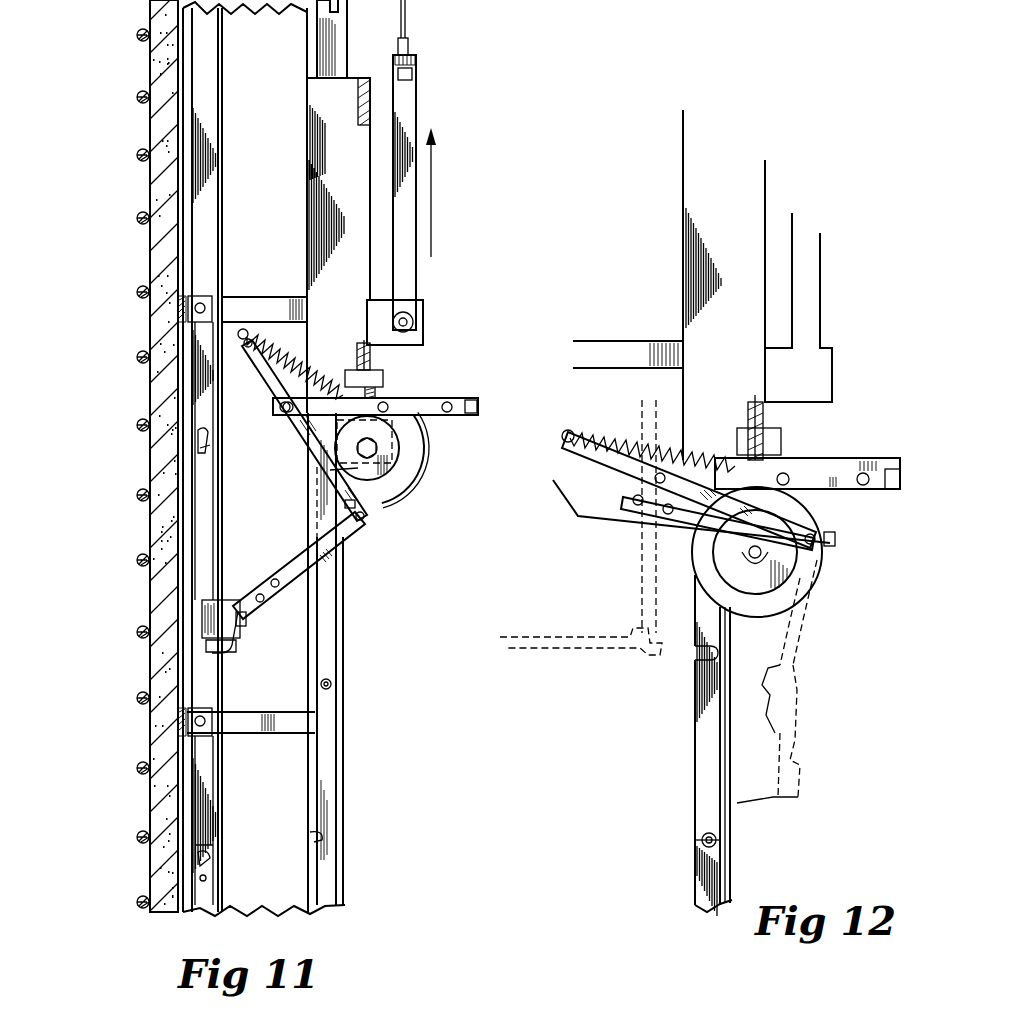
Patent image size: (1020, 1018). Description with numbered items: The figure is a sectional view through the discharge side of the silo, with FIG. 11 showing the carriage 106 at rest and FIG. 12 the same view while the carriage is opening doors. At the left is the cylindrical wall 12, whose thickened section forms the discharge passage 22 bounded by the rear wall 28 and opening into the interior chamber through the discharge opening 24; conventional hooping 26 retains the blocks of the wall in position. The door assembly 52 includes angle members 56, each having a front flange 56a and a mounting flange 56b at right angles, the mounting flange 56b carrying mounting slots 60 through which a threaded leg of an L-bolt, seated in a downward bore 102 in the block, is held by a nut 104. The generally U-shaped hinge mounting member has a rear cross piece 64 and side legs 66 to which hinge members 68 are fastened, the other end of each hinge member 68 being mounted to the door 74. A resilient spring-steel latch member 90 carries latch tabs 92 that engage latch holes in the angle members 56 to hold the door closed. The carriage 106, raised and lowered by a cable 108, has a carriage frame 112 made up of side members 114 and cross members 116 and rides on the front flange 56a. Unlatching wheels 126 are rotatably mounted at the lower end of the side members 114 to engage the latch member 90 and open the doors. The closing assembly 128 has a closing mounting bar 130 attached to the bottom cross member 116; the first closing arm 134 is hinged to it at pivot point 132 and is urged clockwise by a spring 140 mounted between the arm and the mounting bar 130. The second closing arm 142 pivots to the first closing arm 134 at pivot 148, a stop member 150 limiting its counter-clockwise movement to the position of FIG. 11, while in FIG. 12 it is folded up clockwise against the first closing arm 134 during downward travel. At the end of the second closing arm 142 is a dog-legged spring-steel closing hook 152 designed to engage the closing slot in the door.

In FIG. 11, the cylindrical wall 12 is at (137, 268).
In FIG. 11, the discharge passage 22 is at (278, 87).
In FIG. 11, the discharge opening 24 is at (340, 770).
In FIG. 11, the hooping 26 is at (140, 92).
In FIG. 11, the rear wall 28 is at (150, 186).
In FIG. 11, the door assembly 52 is at (362, 700).
In FIG. 11, the angle members 56 is at (355, 52).
In FIG. 12, the angle members 56 is at (745, 872).
In FIG. 11, the front flange 56a is at (348, 862).
In FIG. 12, the front flange 56a is at (735, 815).
In FIG. 11, the mounting flange 56b is at (314, 858).
In FIG. 12, the mounting flange 56b is at (695, 765).
In FIG. 11, the mounting slots 60 is at (308, 838).
In FIG. 12, the mounting slots 60 is at (700, 652).
In FIG. 11, the rear cross piece 64 is at (178, 306).
In FIG. 11, the side legs 66 is at (260, 300).
In FIG. 12, the side legs 66 is at (603, 345).
In FIG. 11, the hinge members 68 is at (178, 385).
In FIG. 11, the door 74 is at (236, 214).
In FIG. 11, the latch member 90 is at (228, 590).
In FIG. 11, the latch tabs 92 is at (240, 610).
In FIG. 11, the downward bore 102 is at (135, 17).
In FIG. 11, the nut 104 is at (330, 681).
In FIG. 12, the nut 104 is at (703, 835).
In FIG. 11, the carriage 106 is at (437, 92).
In FIG. 11, the cable 108 is at (406, 13).
In FIG. 11, the carriage frame 112 is at (305, 68).
In FIG. 12, the carriage frame 112 is at (670, 195).
In FIG. 11, the side members 114 is at (307, 145).
In FIG. 12, the side members 114 is at (683, 218).
In FIG. 11, the cross members 116 is at (358, 108).
In FIG. 12, the cross members 116 is at (765, 418).
In FIG. 11, the unlatching wheels 126 is at (420, 450).
In FIG. 12, the unlatching wheels 126 is at (818, 588).
In FIG. 11, the closing assembly 128 is at (360, 560).
In FIG. 12, the closing assembly 128 is at (858, 435).
In FIG. 11, the closing mounting bar 130 is at (445, 400).
In FIG. 12, the closing mounting bar 130 is at (848, 460).
In FIG. 11, the pivot point 132 is at (298, 440).
In FIG. 12, the pivot point 132 is at (640, 478).
In FIG. 11, the first closing arm 134 is at (280, 447).
In FIG. 12, the first closing arm 134 is at (588, 468).
In FIG. 11, the spring 140 is at (325, 360).
In FIG. 12, the spring 140 is at (615, 440).
In FIG. 11, the second closing arm 142 is at (305, 552).
In FIG. 12, the second closing arm 142 is at (700, 558).
In FIG. 11, the pivot 148 is at (370, 514).
In FIG. 12, the pivot 148 is at (833, 543).
In FIG. 11, the stop member 150 is at (372, 498).
In FIG. 12, the stop member 150 is at (825, 535).
In FIG. 11, the closing hook 152 is at (222, 655).
In FIG. 12, the closing hook 152 is at (553, 483).